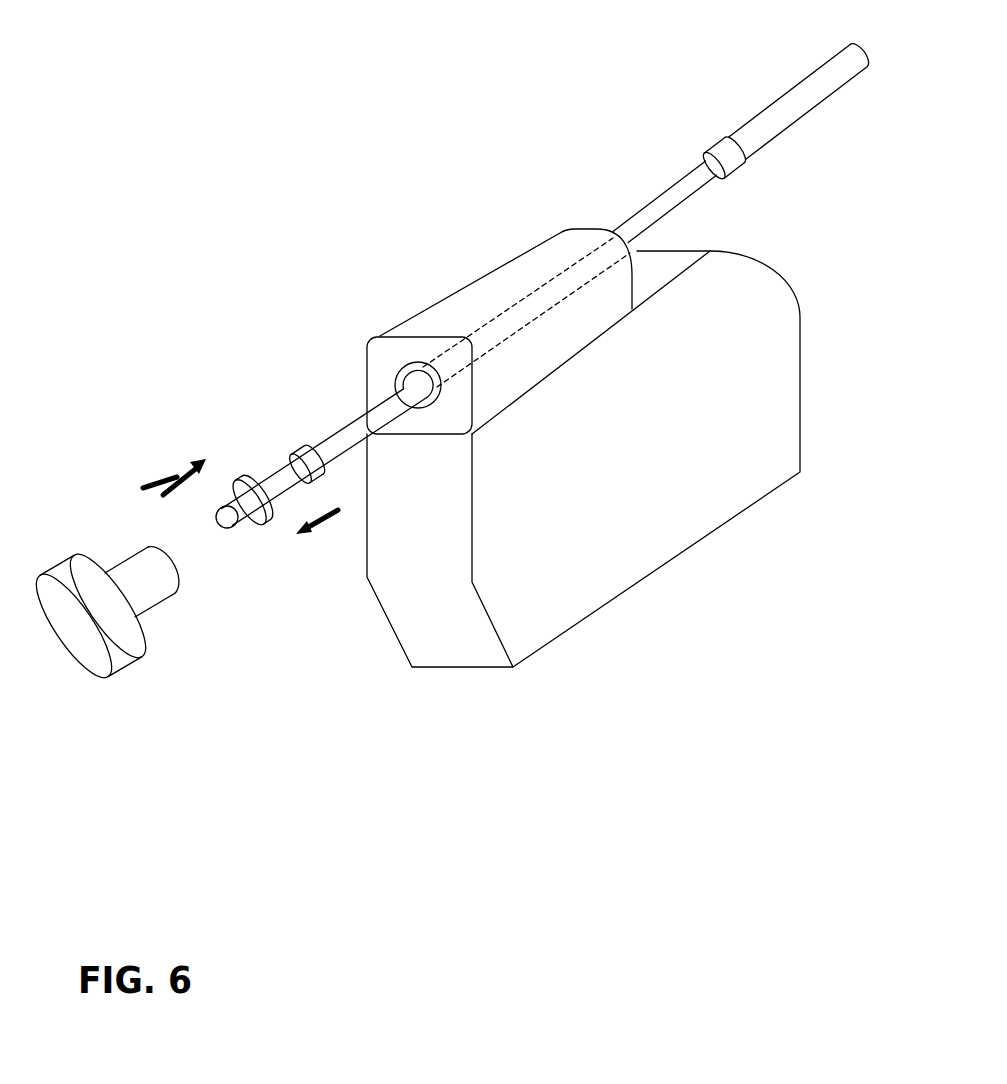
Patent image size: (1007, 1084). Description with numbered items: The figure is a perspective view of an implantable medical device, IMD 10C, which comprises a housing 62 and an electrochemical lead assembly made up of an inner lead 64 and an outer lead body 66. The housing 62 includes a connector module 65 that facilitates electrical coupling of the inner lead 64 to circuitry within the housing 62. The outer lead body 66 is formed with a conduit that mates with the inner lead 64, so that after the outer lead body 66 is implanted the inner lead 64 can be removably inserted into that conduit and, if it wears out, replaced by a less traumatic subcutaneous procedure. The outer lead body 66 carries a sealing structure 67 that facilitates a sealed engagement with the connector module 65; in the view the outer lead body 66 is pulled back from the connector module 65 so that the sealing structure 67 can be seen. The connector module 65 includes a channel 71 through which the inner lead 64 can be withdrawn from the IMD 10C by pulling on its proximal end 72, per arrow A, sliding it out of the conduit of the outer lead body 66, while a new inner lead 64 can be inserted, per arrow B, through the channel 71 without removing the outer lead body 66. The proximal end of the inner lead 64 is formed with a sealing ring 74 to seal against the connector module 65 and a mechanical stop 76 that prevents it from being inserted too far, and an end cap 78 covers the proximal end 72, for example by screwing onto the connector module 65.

The IMD 10C is at (398, 190).
The housing 62 is at (708, 520).
The inner lead 64 is at (637, 213).
The connector module 65 is at (424, 309).
The outer lead body 66 is at (770, 104).
The sealing structure 67 is at (748, 166).
The channel 71 is at (537, 293).
The proximal end 72 is at (207, 450).
The sealing ring 74 is at (263, 526).
The mechanical stop 76 is at (300, 445).
The end cap 78 is at (44, 573).